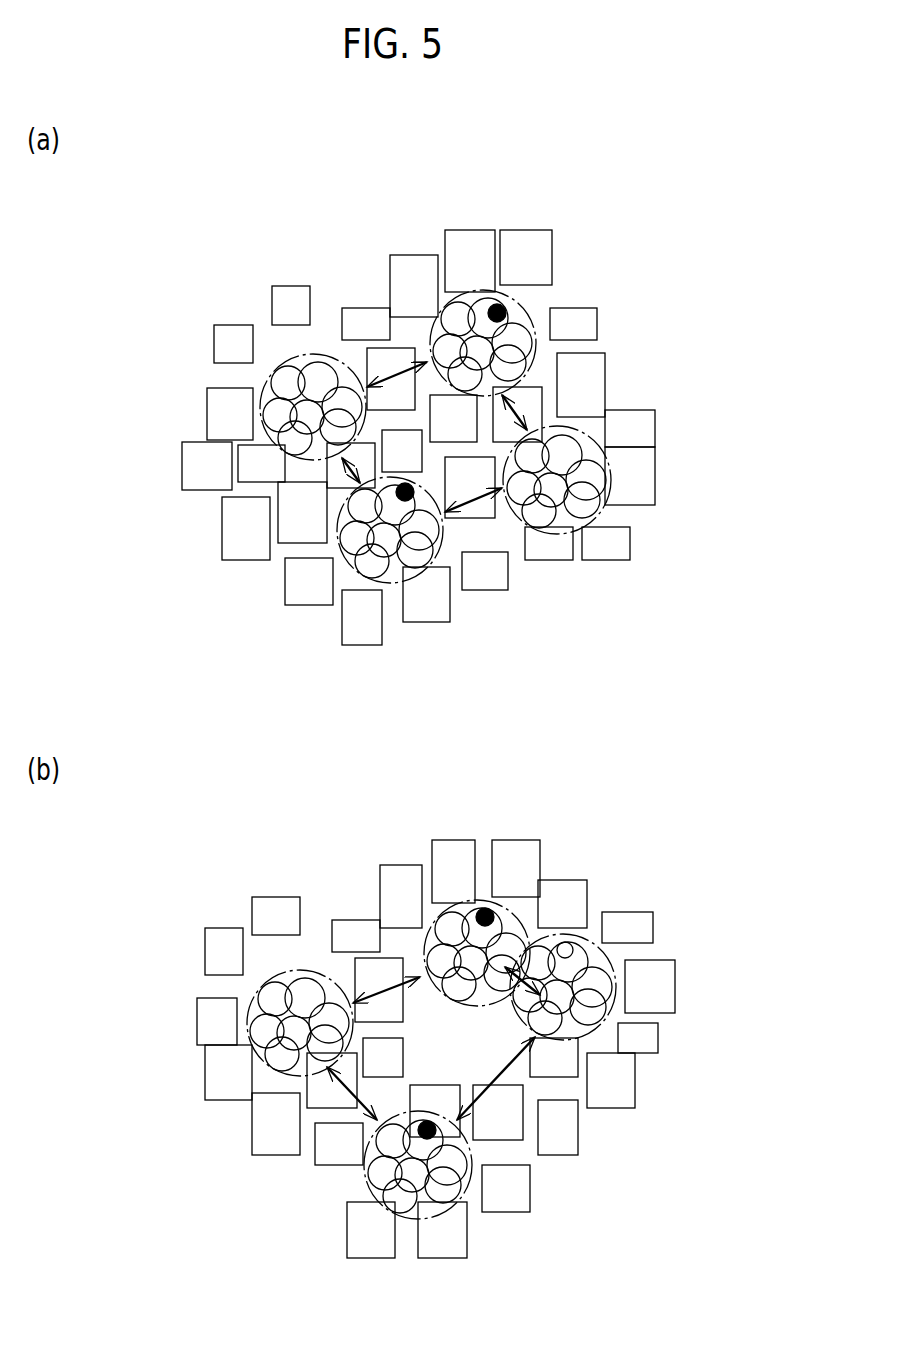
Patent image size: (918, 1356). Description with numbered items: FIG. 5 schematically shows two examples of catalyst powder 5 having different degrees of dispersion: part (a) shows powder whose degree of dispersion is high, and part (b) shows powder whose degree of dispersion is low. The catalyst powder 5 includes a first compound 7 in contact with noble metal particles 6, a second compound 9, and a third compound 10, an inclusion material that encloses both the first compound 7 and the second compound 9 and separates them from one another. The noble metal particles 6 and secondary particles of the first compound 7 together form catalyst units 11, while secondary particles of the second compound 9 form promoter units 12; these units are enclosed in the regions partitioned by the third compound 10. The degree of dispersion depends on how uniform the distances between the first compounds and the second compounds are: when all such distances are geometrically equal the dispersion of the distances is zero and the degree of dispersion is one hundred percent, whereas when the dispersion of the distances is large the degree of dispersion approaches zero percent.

The catalyst powder 5 is at (613, 267).
The noble metal particles 6 is at (500, 308).
The first compound 7 is at (462, 313).
The second compound 9 is at (283, 373).
The third compound 10 is at (362, 638).
The catalyst units 11 is at (533, 370).
The promoter units 12 is at (285, 357).